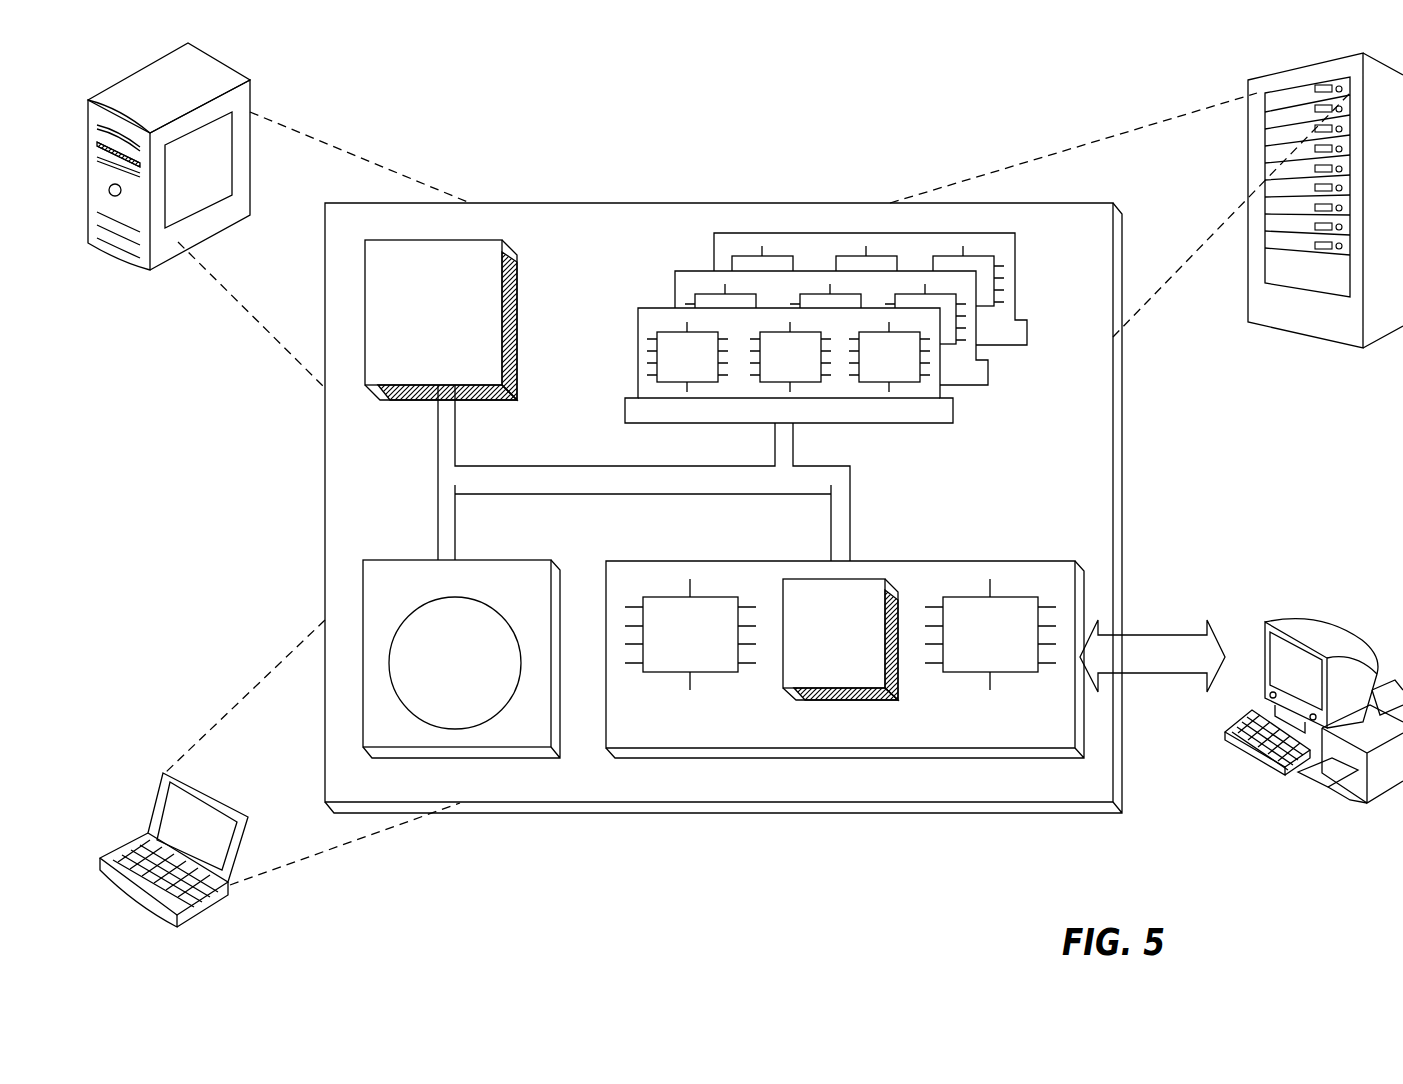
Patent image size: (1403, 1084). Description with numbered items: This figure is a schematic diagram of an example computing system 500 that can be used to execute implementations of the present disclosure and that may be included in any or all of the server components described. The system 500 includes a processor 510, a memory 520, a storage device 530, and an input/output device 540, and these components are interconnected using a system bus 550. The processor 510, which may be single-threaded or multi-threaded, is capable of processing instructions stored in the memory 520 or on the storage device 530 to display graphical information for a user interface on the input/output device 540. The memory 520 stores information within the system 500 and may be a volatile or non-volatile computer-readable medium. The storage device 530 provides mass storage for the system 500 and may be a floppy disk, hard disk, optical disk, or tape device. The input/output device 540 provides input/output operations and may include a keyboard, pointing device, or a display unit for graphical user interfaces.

The computing system 500 is at (535, 120).
The processor 510 is at (492, 377).
The memory 520 is at (1019, 384).
The storage device 530 is at (538, 737).
The input/output device 540 is at (1265, 625).
The system bus 550 is at (640, 486).